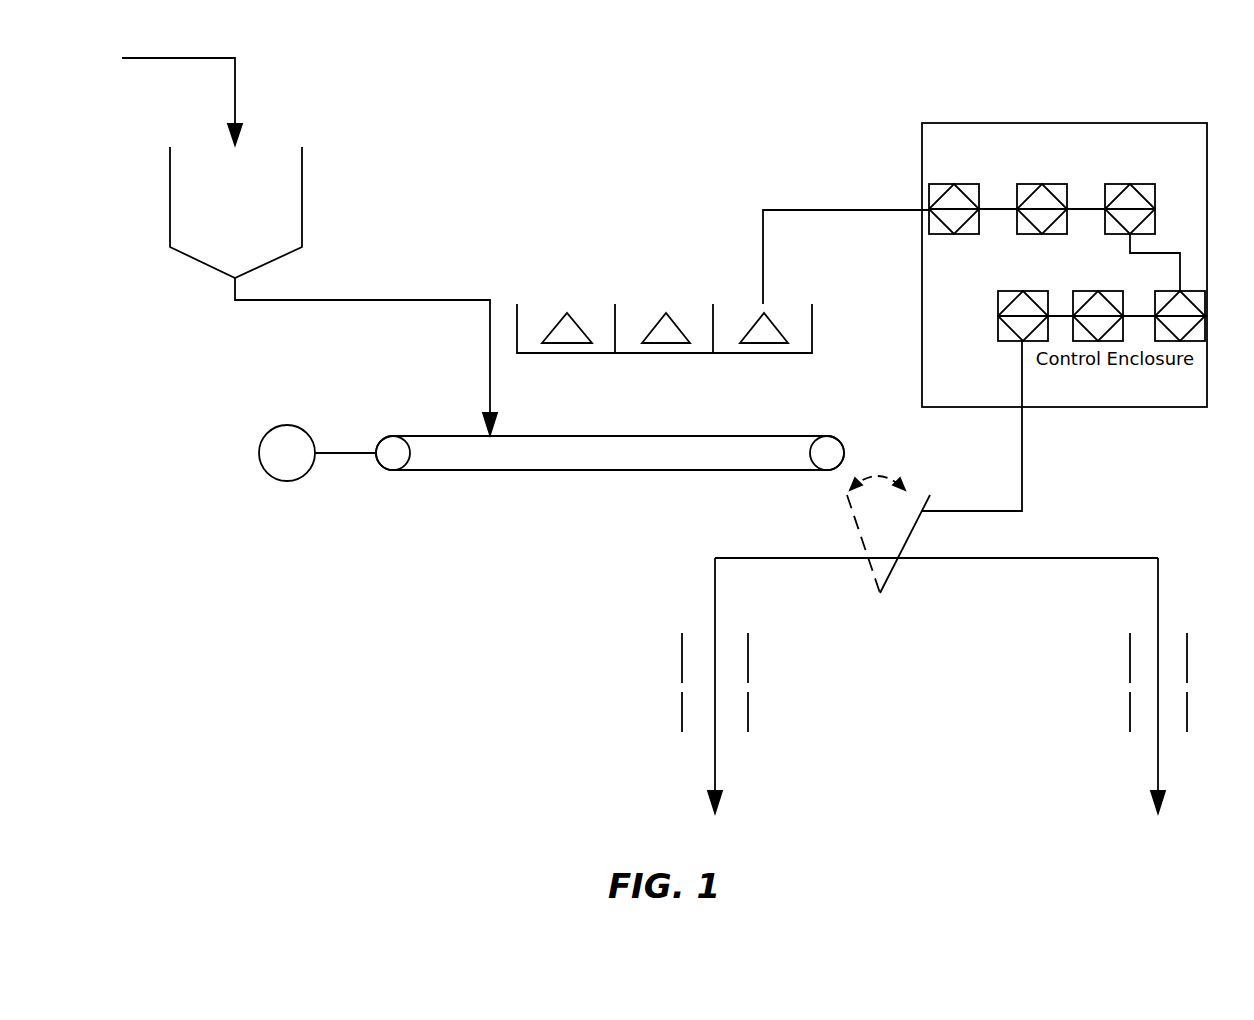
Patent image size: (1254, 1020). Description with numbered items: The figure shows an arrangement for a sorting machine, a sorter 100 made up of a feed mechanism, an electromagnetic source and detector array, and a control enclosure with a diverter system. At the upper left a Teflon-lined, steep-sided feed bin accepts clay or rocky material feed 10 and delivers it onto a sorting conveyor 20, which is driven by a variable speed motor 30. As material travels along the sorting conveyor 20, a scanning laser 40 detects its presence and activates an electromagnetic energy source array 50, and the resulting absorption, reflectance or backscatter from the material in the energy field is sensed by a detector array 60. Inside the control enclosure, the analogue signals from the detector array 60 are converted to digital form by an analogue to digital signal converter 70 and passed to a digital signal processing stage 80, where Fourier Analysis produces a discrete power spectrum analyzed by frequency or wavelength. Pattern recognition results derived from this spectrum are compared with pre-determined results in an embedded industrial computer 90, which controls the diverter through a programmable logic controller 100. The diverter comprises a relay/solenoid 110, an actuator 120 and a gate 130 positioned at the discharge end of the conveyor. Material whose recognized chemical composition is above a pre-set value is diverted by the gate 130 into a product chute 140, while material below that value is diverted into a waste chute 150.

The material feed 10 is at (309, 246).
The sorting conveyor 20 is at (610, 470).
The variable speed motor 30 is at (317, 464).
The scanning laser 40 is at (566, 347).
The electromagnetic energy source array 50 is at (664, 347).
The detector array 60 is at (821, 300).
The analogue to digital signal converter 70 is at (954, 198).
The digital signal processing stage 80 is at (1042, 198).
The embedded industrial computer 90 is at (1142, 226).
The programmable logic controller 100 is at (217, 682).
The relay/solenoid 110 is at (1101, 305).
The actuator 120 is at (985, 390).
The gate 130 is at (888, 548).
The product chute 140 is at (708, 685).
The waste chute 150 is at (1153, 685).